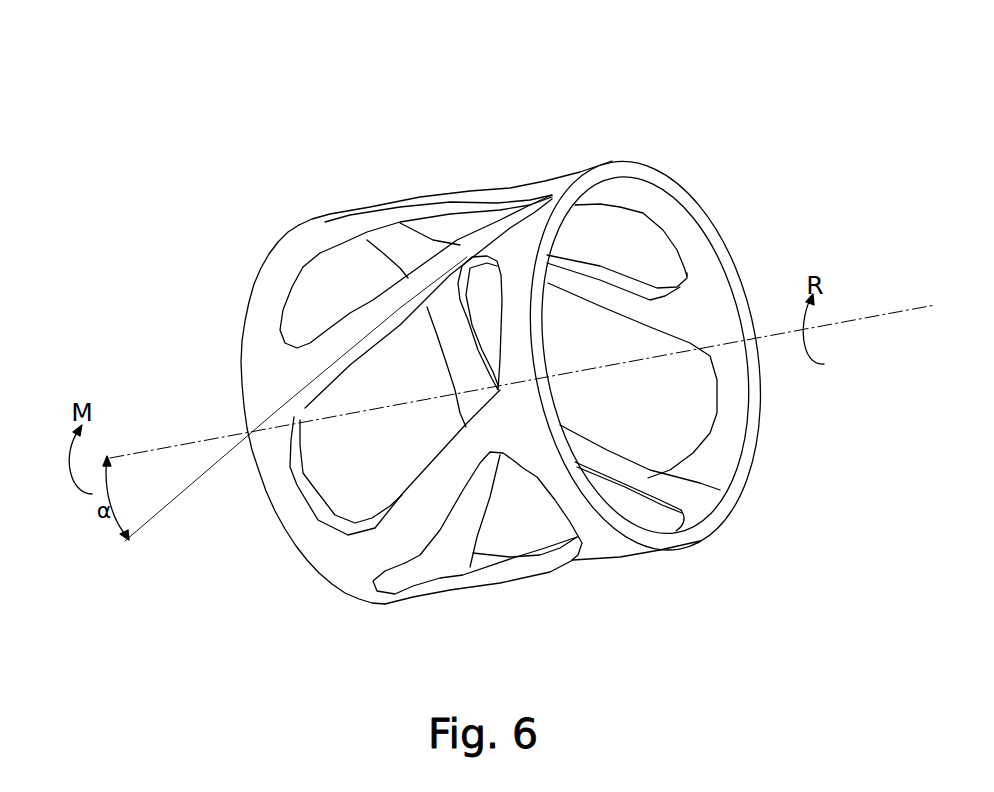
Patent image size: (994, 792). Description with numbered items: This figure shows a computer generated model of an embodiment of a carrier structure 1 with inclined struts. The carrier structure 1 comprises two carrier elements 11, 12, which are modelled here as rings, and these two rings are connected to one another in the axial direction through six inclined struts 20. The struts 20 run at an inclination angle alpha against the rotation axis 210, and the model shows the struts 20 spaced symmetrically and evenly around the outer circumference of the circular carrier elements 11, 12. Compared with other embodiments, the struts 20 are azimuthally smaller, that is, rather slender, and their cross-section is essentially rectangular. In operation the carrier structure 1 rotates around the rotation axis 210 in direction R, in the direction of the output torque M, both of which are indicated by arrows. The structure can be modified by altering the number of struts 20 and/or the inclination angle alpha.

The carrier structure 1 is at (510, 368).
The carrier element 11 is at (370, 461).
The carrier element 12 is at (645, 408).
The inclined strut 20 is at (510, 399).
The rotation axis 210 is at (885, 317).